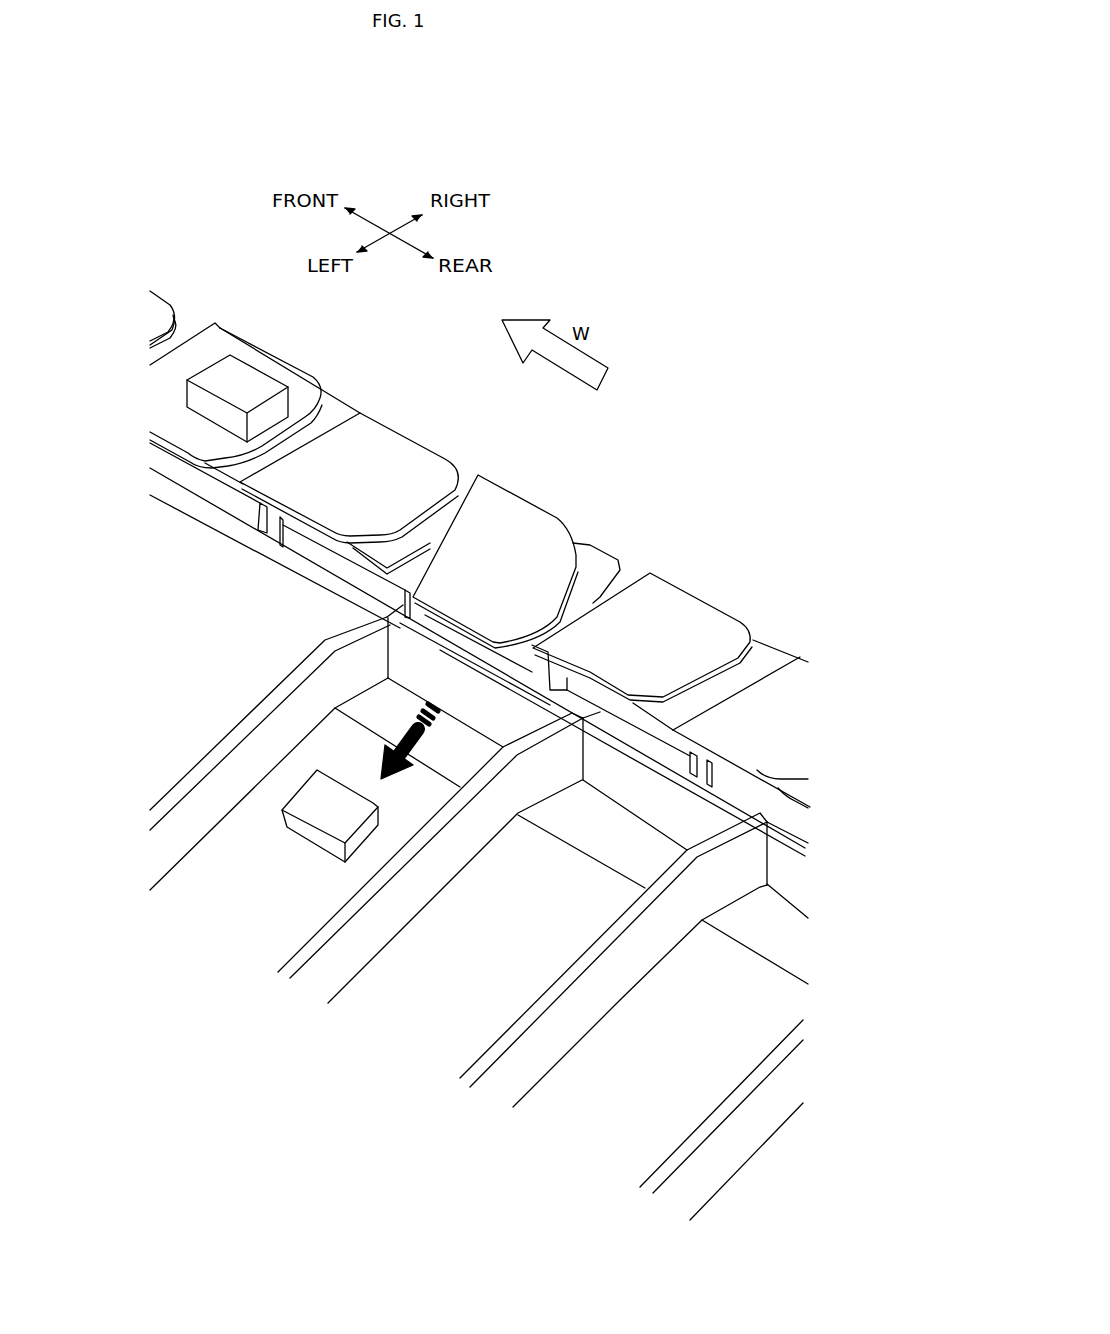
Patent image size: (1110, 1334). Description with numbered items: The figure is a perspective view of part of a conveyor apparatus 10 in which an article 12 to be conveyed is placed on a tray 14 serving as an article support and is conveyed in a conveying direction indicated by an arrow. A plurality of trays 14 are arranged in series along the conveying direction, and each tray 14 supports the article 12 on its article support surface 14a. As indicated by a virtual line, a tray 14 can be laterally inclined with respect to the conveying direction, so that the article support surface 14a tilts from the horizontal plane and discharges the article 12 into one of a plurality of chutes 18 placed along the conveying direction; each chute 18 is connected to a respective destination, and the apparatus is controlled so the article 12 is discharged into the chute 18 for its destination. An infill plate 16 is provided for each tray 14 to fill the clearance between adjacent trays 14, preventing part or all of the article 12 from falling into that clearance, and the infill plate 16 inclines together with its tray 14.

The conveyor apparatus 10 is at (181, 223).
The article 12 is at (238, 378).
The tray 14 is at (440, 443).
The article support surface 14a is at (380, 440).
The infill plate 16 is at (768, 657).
The chute 18 is at (425, 1008).